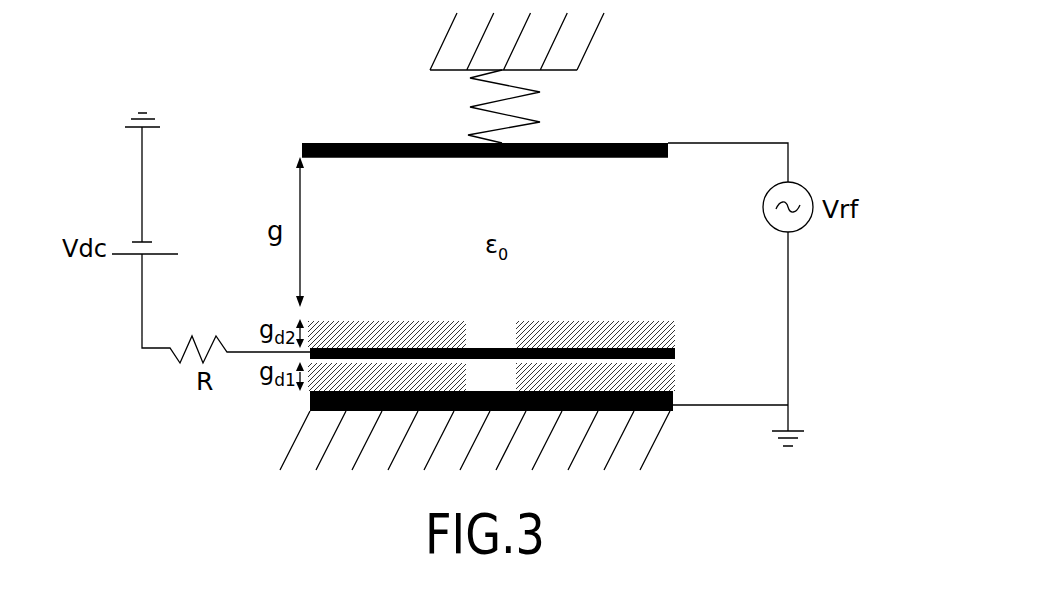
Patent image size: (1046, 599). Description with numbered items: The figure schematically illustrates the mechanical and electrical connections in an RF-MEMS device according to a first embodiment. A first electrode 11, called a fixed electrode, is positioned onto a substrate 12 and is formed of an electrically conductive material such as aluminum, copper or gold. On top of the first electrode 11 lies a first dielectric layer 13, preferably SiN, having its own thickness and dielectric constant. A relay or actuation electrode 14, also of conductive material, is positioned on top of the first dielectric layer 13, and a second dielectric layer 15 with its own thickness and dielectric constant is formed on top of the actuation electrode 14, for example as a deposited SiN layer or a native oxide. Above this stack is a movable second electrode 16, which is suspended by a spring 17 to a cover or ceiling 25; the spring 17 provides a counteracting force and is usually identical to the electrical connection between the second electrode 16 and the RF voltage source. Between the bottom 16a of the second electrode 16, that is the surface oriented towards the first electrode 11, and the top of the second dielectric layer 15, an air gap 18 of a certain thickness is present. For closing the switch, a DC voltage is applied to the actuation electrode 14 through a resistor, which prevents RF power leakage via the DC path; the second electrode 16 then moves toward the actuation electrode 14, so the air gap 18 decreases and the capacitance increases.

The first electrode 11 is at (673, 408).
The substrate 12 is at (642, 448).
The first dielectric layer 13 is at (662, 380).
The relay or actuation electrode 14 is at (674, 352).
The second dielectric layer 15 is at (653, 327).
The second electrode 16 is at (668, 142).
The bottom of the second electrode 16a is at (583, 168).
The spring 17 is at (542, 122).
The air gap 18 is at (655, 240).
The cover or ceiling 25 is at (577, 52).